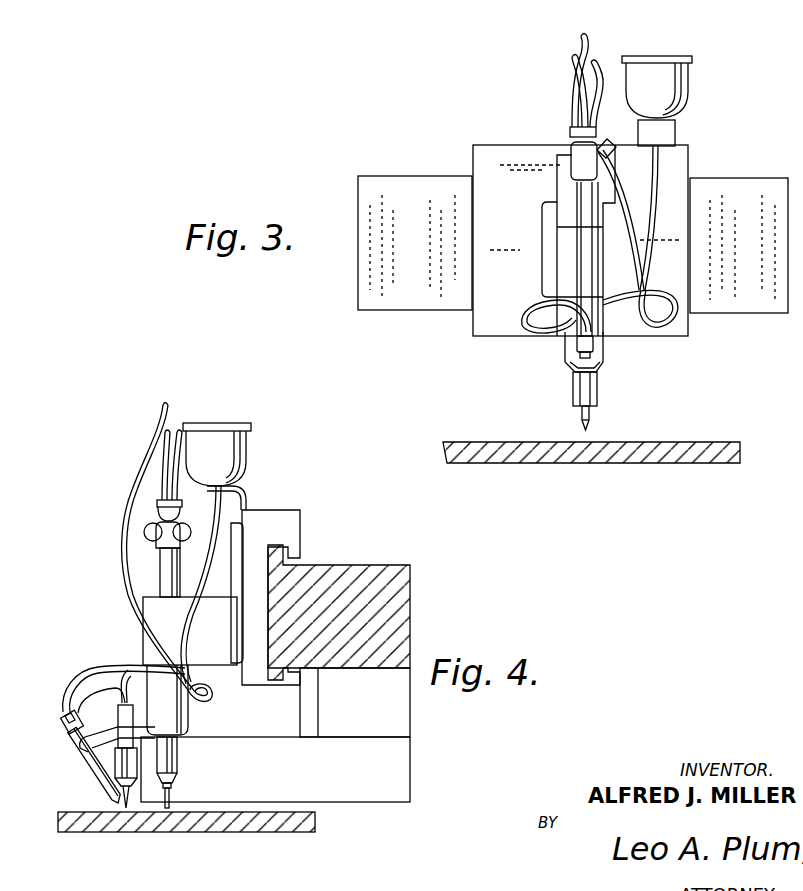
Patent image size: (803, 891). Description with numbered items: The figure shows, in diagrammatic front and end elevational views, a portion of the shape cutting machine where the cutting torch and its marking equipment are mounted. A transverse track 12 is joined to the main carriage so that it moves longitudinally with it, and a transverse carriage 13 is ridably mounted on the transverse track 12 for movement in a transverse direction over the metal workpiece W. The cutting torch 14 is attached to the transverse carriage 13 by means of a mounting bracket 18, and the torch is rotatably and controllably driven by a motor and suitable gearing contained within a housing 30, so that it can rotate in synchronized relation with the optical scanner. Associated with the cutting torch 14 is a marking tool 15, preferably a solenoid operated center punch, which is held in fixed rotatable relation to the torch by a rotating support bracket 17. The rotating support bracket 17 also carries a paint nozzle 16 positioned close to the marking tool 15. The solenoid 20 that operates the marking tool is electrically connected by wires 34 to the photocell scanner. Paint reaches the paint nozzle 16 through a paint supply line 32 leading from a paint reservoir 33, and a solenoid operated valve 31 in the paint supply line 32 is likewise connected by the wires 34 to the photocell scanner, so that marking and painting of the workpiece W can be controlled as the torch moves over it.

In FIG. 3, the transverse track 12 is at (393, 190).
In FIG. 3, the transverse carriage 13 is at (497, 152).
In FIG. 4, the transverse carriage 13 is at (282, 512).
In FIG. 3, the cutting torch 14 is at (598, 388).
In FIG. 4, the cutting torch 14 is at (168, 806).
In FIG. 4, the marking tool 15 is at (127, 805).
In FIG. 3, the paint nozzle 16 is at (589, 422).
In FIG. 4, the paint nozzle 16 is at (100, 775).
In FIG. 3, the rotating support bracket 17 is at (566, 358).
In FIG. 4, the rotating support bracket 17 is at (78, 748).
In FIG. 3, the mounting bracket 18 is at (568, 272).
In FIG. 4, the mounting bracket 18 is at (143, 642).
In FIG. 4, the solenoid 20 is at (120, 715).
In FIG. 3, the housing 30 is at (548, 228).
In FIG. 3, the solenoid operated valve 31 is at (592, 347).
In FIG. 4, the solenoid operated valve 31 is at (60, 720).
In FIG. 3, the paint supply line 32 is at (656, 172).
In FIG. 4, the paint supply line 32 is at (68, 697).
In FIG. 3, the paint reservoir 33 is at (646, 64).
In FIG. 4, the paint reservoir 33 is at (206, 436).
In FIG. 3, the wires 34 is at (641, 293).
In FIG. 4, the wires 34 is at (123, 582).
In FIG. 3, the workpiece W is at (500, 452).
In FIG. 4, the workpiece W is at (270, 834).